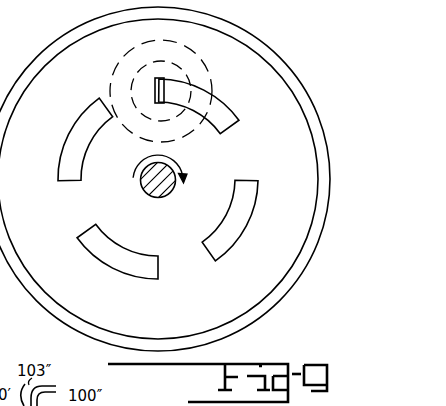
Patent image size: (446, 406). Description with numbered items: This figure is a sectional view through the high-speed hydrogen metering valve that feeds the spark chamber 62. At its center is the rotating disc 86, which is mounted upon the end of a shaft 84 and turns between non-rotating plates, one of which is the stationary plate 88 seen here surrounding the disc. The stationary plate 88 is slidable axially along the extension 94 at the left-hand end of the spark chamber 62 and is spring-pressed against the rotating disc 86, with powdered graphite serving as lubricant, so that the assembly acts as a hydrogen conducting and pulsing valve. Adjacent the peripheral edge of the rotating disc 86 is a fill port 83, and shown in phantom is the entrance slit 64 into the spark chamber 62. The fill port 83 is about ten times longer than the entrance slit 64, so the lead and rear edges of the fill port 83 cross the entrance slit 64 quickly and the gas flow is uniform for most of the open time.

The spark chamber 62 is at (204, 70).
The entrance slit 64 is at (155, 95).
The fill port 83 is at (226, 109).
The shaft 84 is at (162, 204).
The rotating disc 86 is at (266, 283).
The stationary plate 88 is at (306, 262).
The extension 94 is at (139, 63).